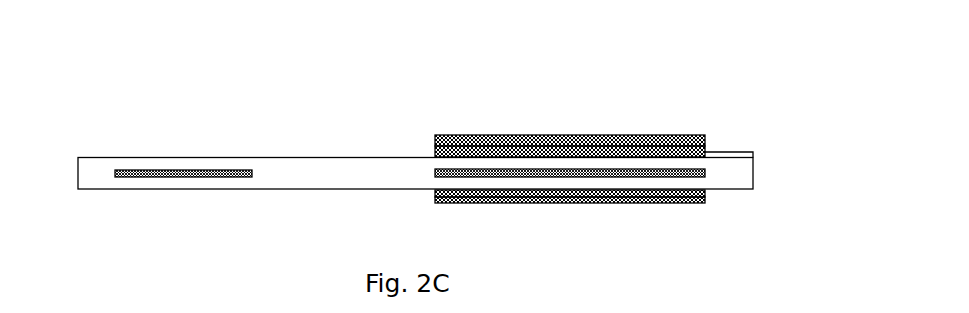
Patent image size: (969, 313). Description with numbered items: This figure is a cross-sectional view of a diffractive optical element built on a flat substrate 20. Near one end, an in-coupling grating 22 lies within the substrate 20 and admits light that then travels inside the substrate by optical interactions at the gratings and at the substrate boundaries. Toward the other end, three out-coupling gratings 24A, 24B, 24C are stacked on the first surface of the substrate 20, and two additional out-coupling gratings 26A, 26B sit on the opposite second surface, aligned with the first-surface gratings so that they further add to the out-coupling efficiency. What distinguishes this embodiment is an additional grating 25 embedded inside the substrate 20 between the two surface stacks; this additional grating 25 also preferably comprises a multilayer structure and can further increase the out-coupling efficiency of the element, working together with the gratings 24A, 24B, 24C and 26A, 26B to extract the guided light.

The substrate 20 is at (320, 157).
The in-coupling grating 22 is at (145, 171).
The out-coupling grating 24A is at (752, 153).
The out-coupling grating 24B is at (705, 147).
The out-coupling grating 24C is at (697, 135).
The additional grating 25 is at (435, 173).
The additional out-coupling grating 26A is at (707, 193).
The additional out-coupling grating 26B is at (683, 203).